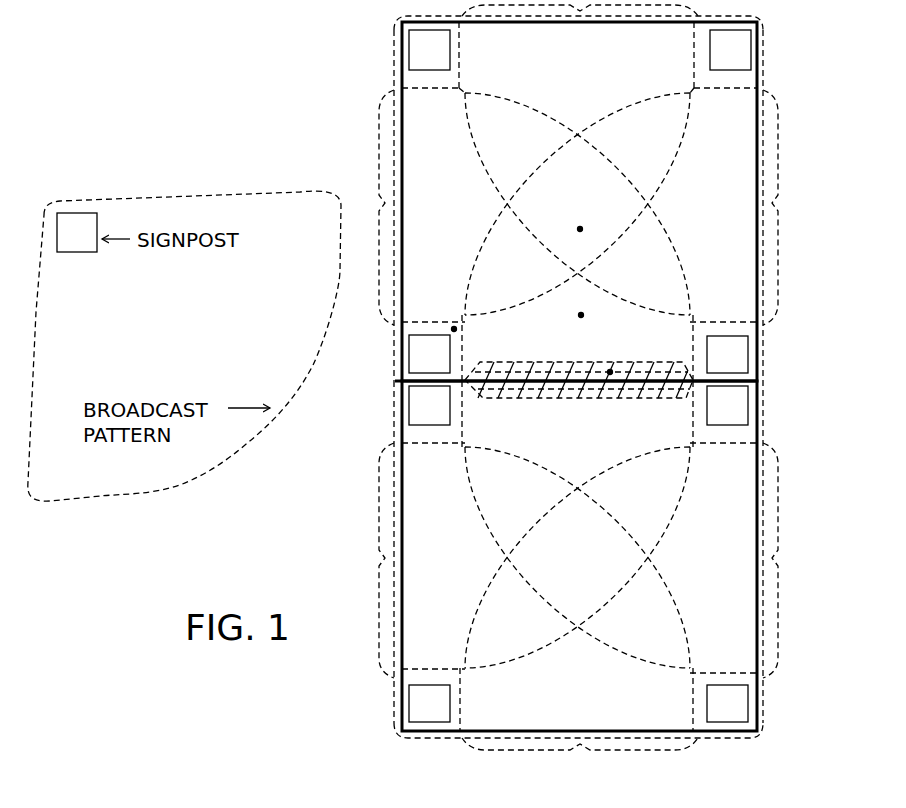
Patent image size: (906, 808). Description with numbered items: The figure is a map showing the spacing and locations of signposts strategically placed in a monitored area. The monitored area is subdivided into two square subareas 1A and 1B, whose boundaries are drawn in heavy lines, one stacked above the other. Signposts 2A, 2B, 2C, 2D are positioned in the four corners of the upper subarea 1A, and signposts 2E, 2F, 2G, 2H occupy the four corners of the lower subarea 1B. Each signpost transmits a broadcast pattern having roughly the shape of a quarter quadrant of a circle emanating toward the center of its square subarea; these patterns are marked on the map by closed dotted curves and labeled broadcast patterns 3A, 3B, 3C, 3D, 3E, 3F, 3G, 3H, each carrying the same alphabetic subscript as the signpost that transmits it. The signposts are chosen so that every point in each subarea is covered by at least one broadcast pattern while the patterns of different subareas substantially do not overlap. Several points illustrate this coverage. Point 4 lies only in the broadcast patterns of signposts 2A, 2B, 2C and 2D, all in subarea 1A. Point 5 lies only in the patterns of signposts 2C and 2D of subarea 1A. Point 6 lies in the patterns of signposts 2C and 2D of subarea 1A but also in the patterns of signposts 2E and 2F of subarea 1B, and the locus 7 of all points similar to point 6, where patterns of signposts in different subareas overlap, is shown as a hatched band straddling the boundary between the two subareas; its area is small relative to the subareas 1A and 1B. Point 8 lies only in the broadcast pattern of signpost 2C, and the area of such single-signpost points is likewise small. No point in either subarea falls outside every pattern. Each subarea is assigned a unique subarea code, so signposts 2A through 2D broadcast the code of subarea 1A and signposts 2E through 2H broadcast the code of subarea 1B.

The subarea 1A is at (754, 226).
The subarea 1B is at (404, 565).
The signpost 2A is at (429, 50).
The signpost 2B is at (730, 50).
The signpost 2C is at (429, 354).
The signpost 2D is at (727, 354).
The signpost 2E is at (429, 405).
The signpost 2F is at (727, 405).
The signpost 2G is at (429, 703).
The signpost 2H is at (727, 703).
The broadcast pattern 3A is at (398, 57).
The broadcast pattern 3B is at (462, 62).
The broadcast pattern 3C is at (622, 182).
The broadcast pattern 3D is at (780, 135).
The broadcast pattern 3E is at (682, 484).
The broadcast pattern 3F is at (770, 497).
The broadcast pattern 3G is at (622, 535).
The broadcast pattern 3H is at (731, 446).
The point 4 is at (570, 231).
The point 5 is at (572, 316).
The point 6 is at (608, 368).
The locus 7 is at (537, 362).
The point 8 is at (454, 324).